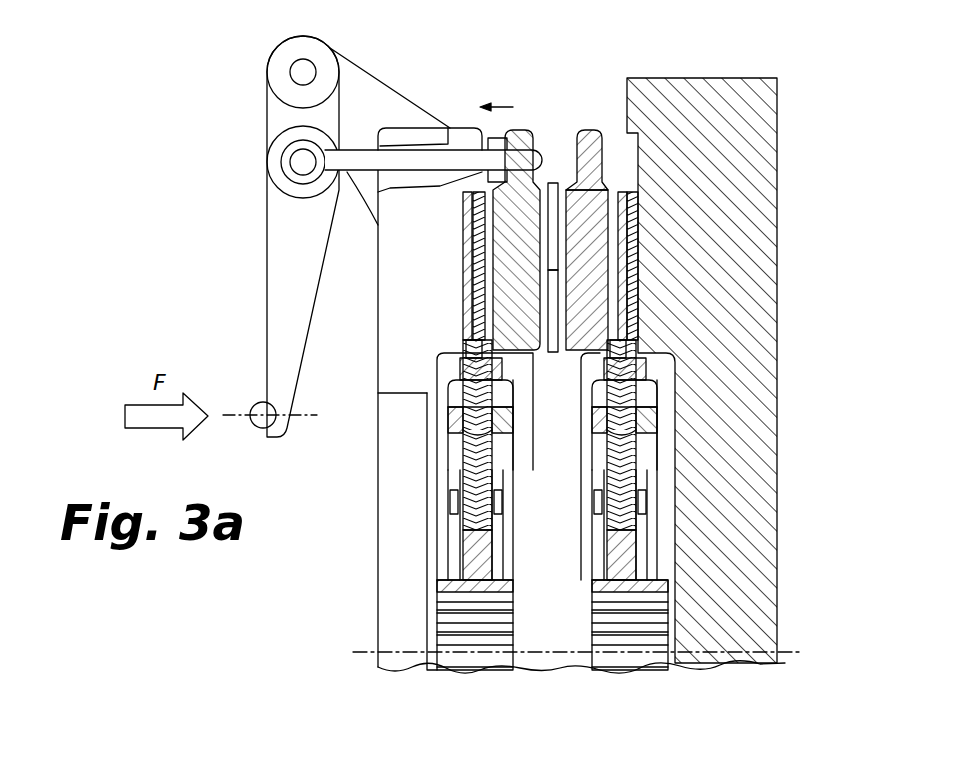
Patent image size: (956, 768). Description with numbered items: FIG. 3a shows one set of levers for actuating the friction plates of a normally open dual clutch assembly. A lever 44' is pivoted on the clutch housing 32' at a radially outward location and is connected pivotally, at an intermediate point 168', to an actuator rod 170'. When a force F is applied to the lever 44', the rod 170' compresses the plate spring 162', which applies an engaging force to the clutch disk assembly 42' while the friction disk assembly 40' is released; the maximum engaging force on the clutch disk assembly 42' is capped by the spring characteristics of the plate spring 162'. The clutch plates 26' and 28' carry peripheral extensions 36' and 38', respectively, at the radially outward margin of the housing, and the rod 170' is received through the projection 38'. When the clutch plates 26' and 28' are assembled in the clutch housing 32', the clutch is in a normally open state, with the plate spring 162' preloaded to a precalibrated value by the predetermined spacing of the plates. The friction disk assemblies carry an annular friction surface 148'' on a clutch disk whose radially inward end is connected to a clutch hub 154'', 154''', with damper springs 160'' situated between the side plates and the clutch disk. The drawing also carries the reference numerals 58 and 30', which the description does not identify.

The upper pulley 58 is at (303, 72).
The intermediate point 168' is at (254, 158).
The actuator rod 170' is at (433, 111).
The lever 44' is at (319, 236).
The peripheral extension 38' is at (526, 205).
The peripheral extension 36' is at (587, 205).
The clutch plate 28' is at (560, 179).
The clutch plate 26' is at (593, 139).
The mounting block 30' is at (742, 370).
The clutch housing 32' is at (566, 421).
The plate spring 162' is at (478, 311).
The annular friction surface 148'' is at (749, 266).
The clutch disk assembly 42' is at (732, 349).
The damper springs 160'' is at (736, 435).
The friction disk assembly 40' is at (507, 435).
The clutch hub 154'' is at (400, 624).
The clutch hub 154''' is at (738, 625).